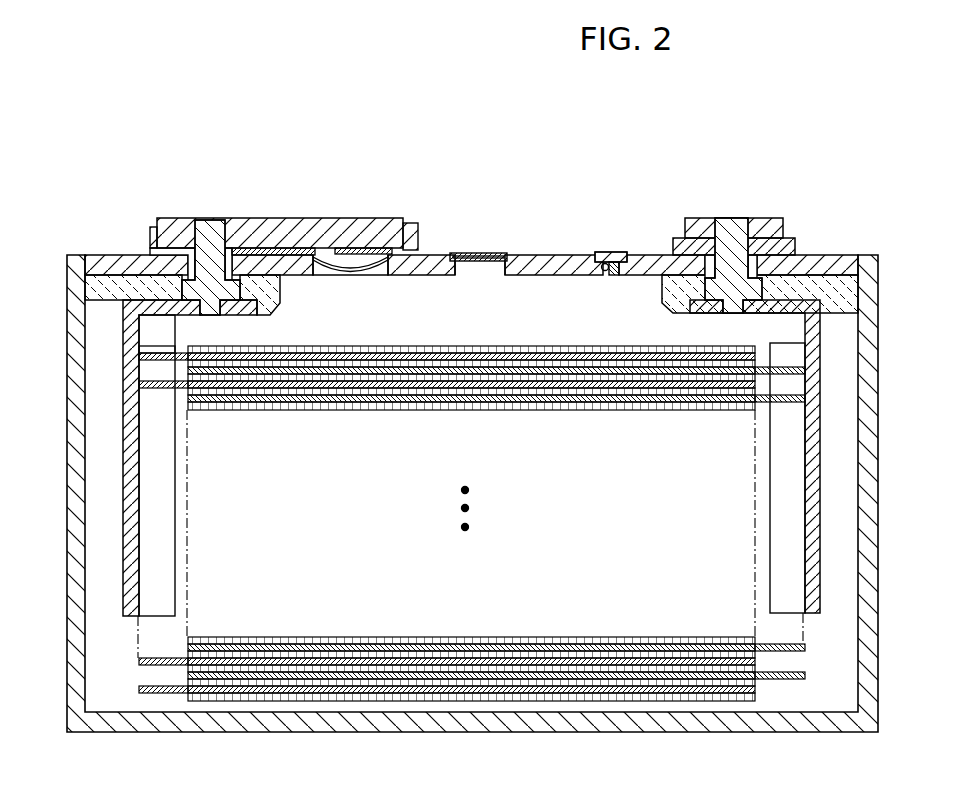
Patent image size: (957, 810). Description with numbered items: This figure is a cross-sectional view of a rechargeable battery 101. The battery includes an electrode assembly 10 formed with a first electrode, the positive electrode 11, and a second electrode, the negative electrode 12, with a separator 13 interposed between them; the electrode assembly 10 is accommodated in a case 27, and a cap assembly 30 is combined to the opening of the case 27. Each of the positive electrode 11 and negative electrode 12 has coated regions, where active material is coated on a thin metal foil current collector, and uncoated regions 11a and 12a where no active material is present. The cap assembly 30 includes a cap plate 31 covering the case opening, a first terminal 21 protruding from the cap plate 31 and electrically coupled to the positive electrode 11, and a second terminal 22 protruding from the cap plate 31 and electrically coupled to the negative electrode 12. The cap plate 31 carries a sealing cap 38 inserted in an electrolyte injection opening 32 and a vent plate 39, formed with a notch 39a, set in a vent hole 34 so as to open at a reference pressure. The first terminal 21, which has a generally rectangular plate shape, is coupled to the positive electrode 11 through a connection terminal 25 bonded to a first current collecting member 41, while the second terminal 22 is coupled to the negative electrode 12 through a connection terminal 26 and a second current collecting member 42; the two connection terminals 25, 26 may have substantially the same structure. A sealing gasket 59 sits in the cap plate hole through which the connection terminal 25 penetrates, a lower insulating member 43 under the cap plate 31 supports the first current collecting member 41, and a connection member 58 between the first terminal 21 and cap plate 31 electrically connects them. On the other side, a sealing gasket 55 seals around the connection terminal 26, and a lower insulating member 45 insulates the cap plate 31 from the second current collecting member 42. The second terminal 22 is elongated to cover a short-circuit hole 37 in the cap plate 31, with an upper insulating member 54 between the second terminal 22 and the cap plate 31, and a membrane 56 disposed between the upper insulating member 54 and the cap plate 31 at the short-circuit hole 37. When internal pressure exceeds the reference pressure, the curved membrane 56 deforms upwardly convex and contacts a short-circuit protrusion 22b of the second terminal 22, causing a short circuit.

The rechargeable battery 101 is at (495, 105).
The electrode assembly 10 is at (470, 564).
The first electrode (positive electrode) 11 is at (662, 680).
The uncoated region of the positive electrode 11a is at (783, 680).
The second electrode (negative electrode) 12 is at (277, 693).
The uncoated region of the negative electrode 12a is at (150, 697).
The separator 13 is at (475, 668).
The first terminal 21 is at (765, 226).
The second terminal 22 is at (176, 226).
The short-circuit protrusion 22b is at (328, 270).
The connection terminal 25 is at (735, 228).
The connection terminal 26 is at (210, 232).
The case 27 is at (868, 530).
The cap assembly 30 is at (440, 256).
The cap plate 31 is at (838, 258).
The electrolyte injection opening 32 is at (607, 271).
The vent hole 34 is at (477, 276).
The short-circuit hole 37 is at (327, 262).
The sealing cap 38 is at (607, 252).
The vent plate 39 is at (503, 254).
The notch 39a is at (478, 253).
The first current collecting member 41 is at (820, 412).
The second current collecting member 42 is at (130, 368).
The lower insulating member 43 is at (840, 294).
The lower insulating member 45 is at (100, 290).
The upper insulating member 54 is at (415, 226).
The sealing gasket 55 is at (157, 266).
The membrane 56 is at (362, 256).
The connection member 58 is at (795, 250).
The sealing gasket 59 is at (712, 266).